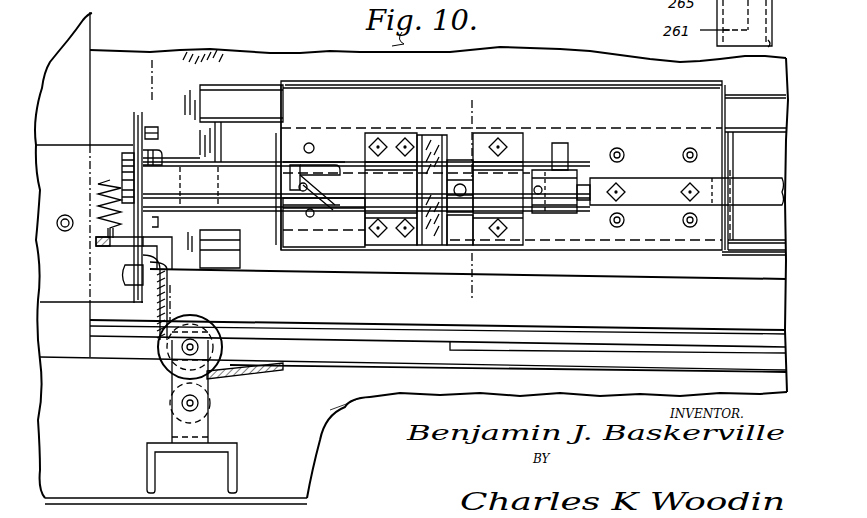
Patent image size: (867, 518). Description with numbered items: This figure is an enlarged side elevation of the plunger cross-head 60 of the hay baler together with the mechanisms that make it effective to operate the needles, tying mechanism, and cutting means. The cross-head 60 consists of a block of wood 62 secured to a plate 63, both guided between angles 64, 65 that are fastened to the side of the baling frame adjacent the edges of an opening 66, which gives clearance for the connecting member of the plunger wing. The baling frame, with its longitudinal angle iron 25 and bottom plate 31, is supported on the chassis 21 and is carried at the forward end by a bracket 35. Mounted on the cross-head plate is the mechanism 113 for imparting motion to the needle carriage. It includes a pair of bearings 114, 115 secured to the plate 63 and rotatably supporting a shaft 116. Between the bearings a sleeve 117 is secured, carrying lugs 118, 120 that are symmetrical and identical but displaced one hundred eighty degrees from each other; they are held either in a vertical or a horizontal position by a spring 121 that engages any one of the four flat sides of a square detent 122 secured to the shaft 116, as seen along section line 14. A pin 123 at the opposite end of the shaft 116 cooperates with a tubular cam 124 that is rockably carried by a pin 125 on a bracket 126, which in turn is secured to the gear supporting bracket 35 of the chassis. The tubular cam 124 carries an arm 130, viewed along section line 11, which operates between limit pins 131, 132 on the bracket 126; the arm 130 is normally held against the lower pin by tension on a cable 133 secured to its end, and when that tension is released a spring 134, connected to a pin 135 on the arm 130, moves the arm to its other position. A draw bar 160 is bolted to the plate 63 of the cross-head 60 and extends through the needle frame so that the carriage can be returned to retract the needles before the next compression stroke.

The section line 11- 11 is at (137, 71).
The section line 14- 14 is at (462, 112).
The chassis 21 is at (320, 417).
The longitudinal angle iron 25 is at (610, 313).
The bottom plate 31 is at (537, 347).
The bracket 35 is at (84, 29).
The cross-head 60 is at (466, 80).
The block of wood 62 is at (735, 148).
The plate 63 is at (618, 95).
The angle 64 is at (741, 103).
The angle 65 is at (732, 265).
The opening 66 is at (237, 130).
The needle carriage motion imparting mechanism 113 is at (402, 118).
The bearing 114 is at (375, 170).
The bearing 115 is at (517, 147).
The shaft 116 is at (355, 203).
The sleeve 117 is at (470, 212).
The lug 118 is at (428, 147).
The lug 120 is at (428, 245).
The spring 121 is at (565, 147).
The square detent 122 is at (610, 178).
The pin 123 is at (295, 172).
The tubular cam 124 is at (247, 208).
The pin 125 is at (168, 170).
The bracket 126 is at (135, 152).
The arm 130 is at (147, 255).
The limit pin 131 is at (160, 230).
The limit pin 132 is at (152, 128).
The cable 133 is at (250, 378).
The spring 134 is at (112, 186).
The pin 135 is at (97, 236).
The draw bar 160 is at (713, 187).